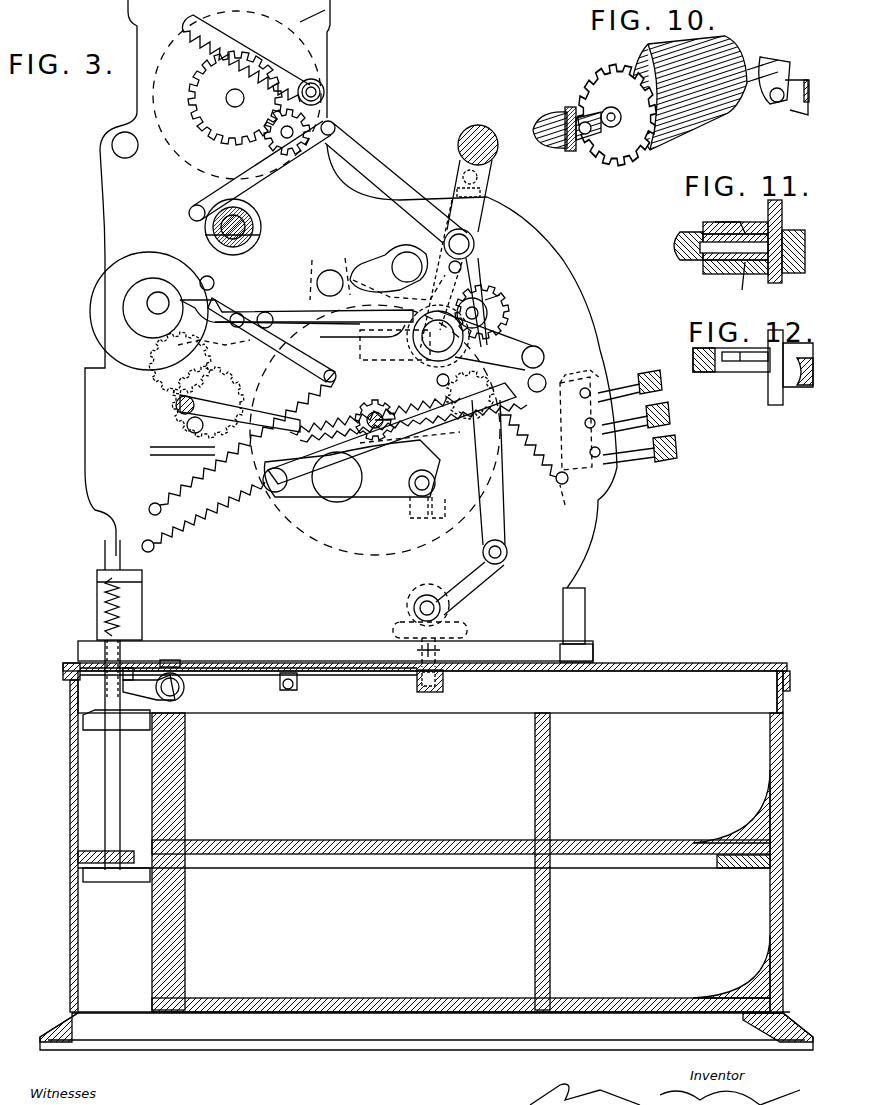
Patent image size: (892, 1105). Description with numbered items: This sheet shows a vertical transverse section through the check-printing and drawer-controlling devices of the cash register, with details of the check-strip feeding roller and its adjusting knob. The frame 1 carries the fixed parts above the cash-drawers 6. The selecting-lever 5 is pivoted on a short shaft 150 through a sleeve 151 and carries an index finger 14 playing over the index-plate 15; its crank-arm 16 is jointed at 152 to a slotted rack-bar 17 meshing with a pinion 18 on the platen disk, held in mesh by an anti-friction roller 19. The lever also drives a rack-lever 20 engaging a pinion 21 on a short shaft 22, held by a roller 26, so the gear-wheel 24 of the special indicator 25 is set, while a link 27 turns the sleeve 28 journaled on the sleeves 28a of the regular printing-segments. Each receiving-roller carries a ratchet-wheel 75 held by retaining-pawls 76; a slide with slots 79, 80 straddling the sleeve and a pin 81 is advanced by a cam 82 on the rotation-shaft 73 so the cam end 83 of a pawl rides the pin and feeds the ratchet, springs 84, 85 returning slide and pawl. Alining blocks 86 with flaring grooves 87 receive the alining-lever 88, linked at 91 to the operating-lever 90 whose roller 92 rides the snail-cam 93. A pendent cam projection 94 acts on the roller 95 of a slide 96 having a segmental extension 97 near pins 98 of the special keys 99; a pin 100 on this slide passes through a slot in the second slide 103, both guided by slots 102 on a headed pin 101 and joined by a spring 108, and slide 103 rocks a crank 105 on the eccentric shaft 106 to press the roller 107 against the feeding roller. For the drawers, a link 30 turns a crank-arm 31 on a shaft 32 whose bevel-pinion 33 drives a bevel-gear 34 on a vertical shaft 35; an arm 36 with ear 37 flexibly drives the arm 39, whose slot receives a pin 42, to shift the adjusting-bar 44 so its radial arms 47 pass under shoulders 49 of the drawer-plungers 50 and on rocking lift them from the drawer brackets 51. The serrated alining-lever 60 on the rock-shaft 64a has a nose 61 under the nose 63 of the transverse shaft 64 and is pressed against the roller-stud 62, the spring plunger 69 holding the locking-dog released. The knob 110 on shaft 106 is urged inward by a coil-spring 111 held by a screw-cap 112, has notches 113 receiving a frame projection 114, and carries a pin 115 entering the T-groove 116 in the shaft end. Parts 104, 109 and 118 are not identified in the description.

In FIG. 3, the frame 1 is at (312, 15).
In FIG. 3, the selecting-lever 5 is at (490, 178).
In FIG. 3, the cash-drawers 6 is at (426, 856).
In FIG. 3, the index finger 14 is at (462, 177).
In FIG. 3, the index-plate 15 is at (520, 220).
In FIG. 3, the crank-arm 16 is at (465, 332).
In FIG. 3, the slotted rack-bar 17 is at (283, 458).
In FIG. 3, the pinion 18 is at (405, 430).
In FIG. 3, the anti-friction roller 19 is at (362, 478).
In FIG. 3, the rack-lever 20 is at (385, 165).
In FIG. 3, the pinion 21 is at (268, 142).
In FIG. 3, the short shaft 22 is at (334, 120).
In FIG. 3, the gear-wheel 24 is at (235, 98).
In FIG. 3, the special indicator 25 is at (237, 95).
In FIG. 3, the antifriction-roller 26 is at (324, 90).
In FIG. 3, the link 27 is at (262, 178).
In FIG. 3, the sleeve 28 is at (262, 212).
In FIG. 3, the sleeves of the regular printing-segments 28a is at (262, 232).
In FIG. 3, the link 30 is at (510, 480).
In FIG. 3, the crank-arm 31 is at (480, 580).
In FIG. 3, the short shaft 32 is at (414, 604).
In FIG. 3, the bevel-pinion 33 is at (450, 608).
In FIG. 3, the bevel-gear 34 is at (392, 630).
In FIG. 3, the short vertical shaft 35 is at (442, 652).
In FIG. 3, the short arm 36 is at (390, 680).
In FIG. 3, the ear 37 is at (304, 680).
In FIG. 3, the arm 39 is at (280, 678).
In FIG. 3, the pin 42 is at (178, 666).
In FIG. 3, the adjusting-bar 44 is at (185, 688).
In FIG. 3, the radial arms 47 is at (138, 688).
In FIG. 3, the shoulder 49 is at (128, 670).
In FIG. 3, the drawer-plungers 50 is at (104, 750).
In FIG. 3, the brackets 51 is at (83, 722).
In FIG. 3, the alining-lever 60 is at (480, 290).
In FIG. 3, the nose 61 is at (392, 268).
In FIG. 3, the roller-stud 62 is at (443, 246).
In FIG. 3, the nose 63 is at (334, 270).
In FIG. 3, the transverse shaft 64 is at (310, 327).
In FIG. 3, the transverse rock-shaft 64a is at (400, 260).
In FIG. 3, the spring-pressed plunger 69 is at (434, 490).
In FIG. 3, the rotation-shaft 73 is at (163, 294).
In FIG. 3, the ratchet-wheel 75 is at (395, 337).
In FIG. 3, the retaining-pawls 76 is at (325, 273).
In FIG. 3, the slot 79 is at (180, 363).
In FIG. 3, the slot 80 is at (407, 280).
In FIG. 3, the pin 81 is at (240, 312).
In FIG. 3, the cam 82 is at (145, 292).
In FIG. 3, the cam end 83 is at (218, 340).
In FIG. 3, the coil-spring 84 is at (178, 538).
In FIG. 3, the coil-spring 85 is at (168, 497).
In FIG. 3, the alining blocks 86 is at (412, 512).
In FIG. 3, the flaring groove 87 is at (438, 518).
In FIG. 3, the alining-lever 88 is at (320, 492).
In FIG. 3, the operating-lever 90 is at (270, 305).
In FIG. 3, the link 91 is at (208, 402).
In FIG. 3, the roller 92 is at (213, 275).
In FIG. 3, the snail-cam 93 is at (145, 252).
In FIG. 3, the cam projection 94 is at (436, 381).
In FIG. 3, the antifriction-roller 95 is at (413, 416).
In FIG. 3, the slide 96 is at (540, 347).
In FIG. 3, the segmental extension 97 is at (610, 470).
In FIG. 3, the pins 98 is at (668, 412).
In FIG. 3, the special keys 99 is at (670, 448).
In FIG. 3, the pin 100 is at (345, 405).
In FIG. 10, the pin 100 is at (606, 130).
In FIG. 3, the headed pin 101 is at (566, 355).
In FIG. 3, the slots 102 is at (575, 372).
In FIG. 3, the second slide 103 is at (606, 517).
In FIG. 10, the second slide 103 is at (804, 108).
In FIG. 3, the adjusting screw 104 is at (660, 385).
In FIG. 3, the crank 105 is at (186, 424).
In FIG. 10, the crank 105 is at (772, 104).
In FIG. 3, the eccentric journal-shaft 106 is at (176, 403).
In FIG. 10, the eccentric journal-shaft 106 is at (762, 62).
In FIG. 3, the roller 107 is at (150, 451).
In FIG. 10, the roller 107 is at (690, 132).
In FIG. 3, the coil-spring 108 is at (100, 355).
In FIG. 3, the gear 109 is at (438, 370).
In FIG. 11, the knob 110 is at (712, 223).
In FIG. 11, the coil-spring 111 is at (718, 268).
In FIG. 11, the screw-cap 112 is at (697, 246).
In FIG. 11, the notches 113 is at (768, 220).
In FIG. 10, the projection 114 is at (568, 110).
In FIG. 11, the pin 115 is at (740, 280).
In FIG. 12, the T-groove 116 is at (748, 362).
In FIG. 10, the bearing 118 is at (578, 122).
In FIG. 3, the short shaft 150 is at (490, 300).
In FIG. 3, the sleeve 151 is at (488, 312).
In FIG. 3, the joint 152 is at (572, 338).